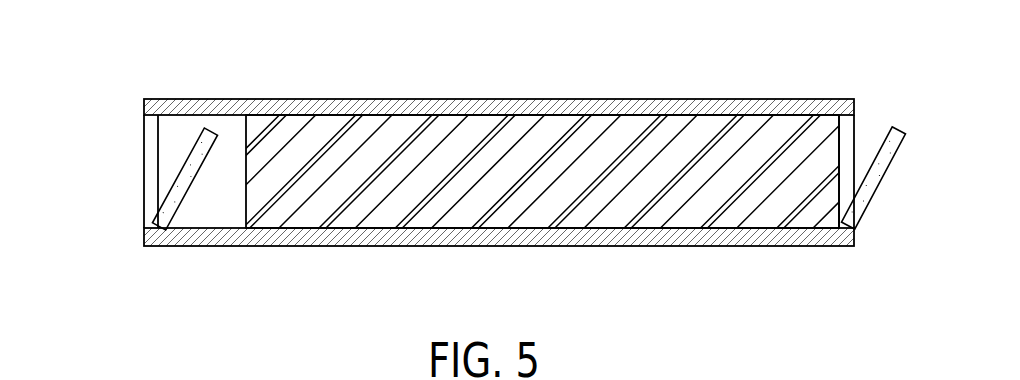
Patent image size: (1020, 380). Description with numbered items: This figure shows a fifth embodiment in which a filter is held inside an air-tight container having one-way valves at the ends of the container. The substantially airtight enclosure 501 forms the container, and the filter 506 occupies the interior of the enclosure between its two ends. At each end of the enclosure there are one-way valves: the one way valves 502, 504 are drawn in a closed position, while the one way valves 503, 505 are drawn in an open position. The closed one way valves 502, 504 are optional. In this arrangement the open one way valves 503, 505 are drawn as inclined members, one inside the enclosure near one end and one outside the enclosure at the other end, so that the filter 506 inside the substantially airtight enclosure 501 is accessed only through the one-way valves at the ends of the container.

The substantially airtight enclosure 501 is at (205, 108).
The one way valve 502 is at (152, 176).
The one way valve 503 is at (197, 156).
The one way valve 504 is at (843, 123).
The one way valve 505 is at (882, 177).
The filter 506 is at (445, 135).